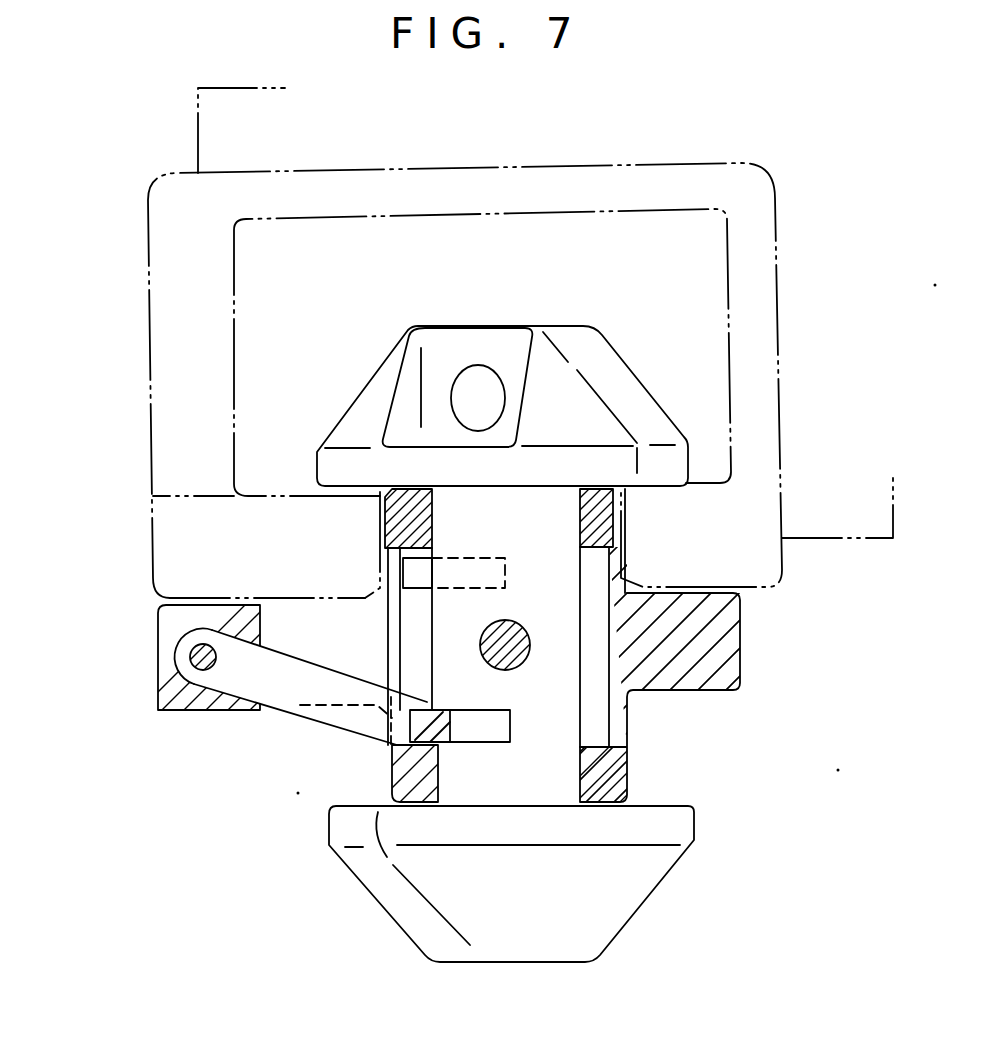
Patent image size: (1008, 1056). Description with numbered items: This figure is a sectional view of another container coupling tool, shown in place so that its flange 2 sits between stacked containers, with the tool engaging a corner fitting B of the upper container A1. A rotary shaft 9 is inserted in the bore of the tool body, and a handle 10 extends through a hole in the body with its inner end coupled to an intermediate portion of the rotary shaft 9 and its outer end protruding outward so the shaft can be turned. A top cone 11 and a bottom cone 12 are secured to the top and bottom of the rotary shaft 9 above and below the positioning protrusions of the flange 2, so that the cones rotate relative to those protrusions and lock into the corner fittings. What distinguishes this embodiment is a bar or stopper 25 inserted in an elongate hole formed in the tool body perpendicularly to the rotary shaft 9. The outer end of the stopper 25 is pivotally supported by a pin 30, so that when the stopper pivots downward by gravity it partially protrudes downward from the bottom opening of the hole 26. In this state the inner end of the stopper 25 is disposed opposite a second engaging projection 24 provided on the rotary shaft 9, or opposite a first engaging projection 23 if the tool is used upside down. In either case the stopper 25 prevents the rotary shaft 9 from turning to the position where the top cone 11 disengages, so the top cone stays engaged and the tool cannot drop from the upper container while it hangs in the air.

The container A1 is at (200, 113).
The corner fitting B is at (148, 203).
The flange 2 is at (157, 620).
The rotary shaft 9 is at (562, 535).
The handle 10 is at (518, 663).
The top cone 11 is at (577, 333).
The bottom cone 12 is at (520, 948).
The first engaging projection 23 is at (410, 577).
The second engaging projection 24 is at (392, 775).
The stopper 25 is at (238, 683).
The hole 26 is at (290, 608).
The pin 30 is at (200, 660).